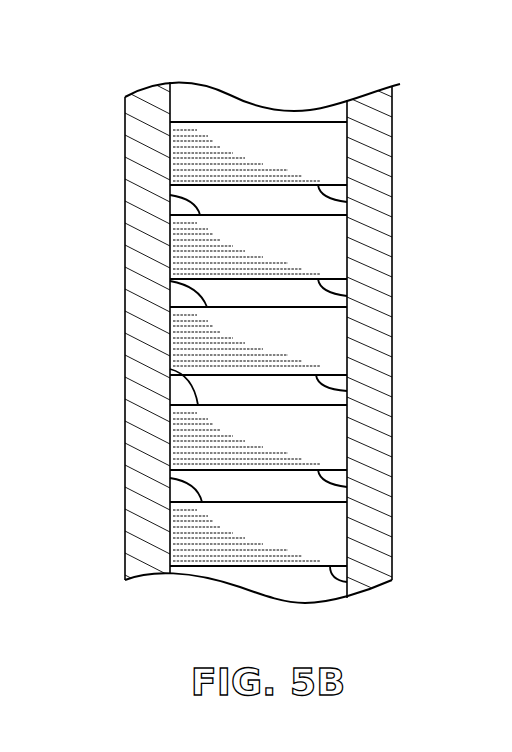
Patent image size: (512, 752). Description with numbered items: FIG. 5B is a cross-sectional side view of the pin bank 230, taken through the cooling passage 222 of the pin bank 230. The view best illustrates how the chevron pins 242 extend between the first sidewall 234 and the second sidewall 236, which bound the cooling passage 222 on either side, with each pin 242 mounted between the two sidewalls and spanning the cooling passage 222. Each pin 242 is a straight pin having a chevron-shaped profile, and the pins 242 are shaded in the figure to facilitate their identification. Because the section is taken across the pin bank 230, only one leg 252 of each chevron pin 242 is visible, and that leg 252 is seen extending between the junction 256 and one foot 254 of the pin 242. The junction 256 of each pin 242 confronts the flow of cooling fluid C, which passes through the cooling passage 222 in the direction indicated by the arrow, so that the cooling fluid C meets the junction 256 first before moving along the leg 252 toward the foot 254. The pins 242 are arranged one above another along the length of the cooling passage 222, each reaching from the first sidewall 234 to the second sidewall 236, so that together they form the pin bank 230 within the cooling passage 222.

The cooling passage 222 is at (217, 108).
The pin bank 230 is at (190, 150).
The first sidewall 234 is at (122, 128).
The second sidewall 236 is at (393, 172).
The chevron pin 242 is at (320, 143).
The leg 252 is at (188, 168).
The foot 254 is at (348, 202).
The junction 256 is at (310, 120).
The cooling fluid C is at (255, 330).